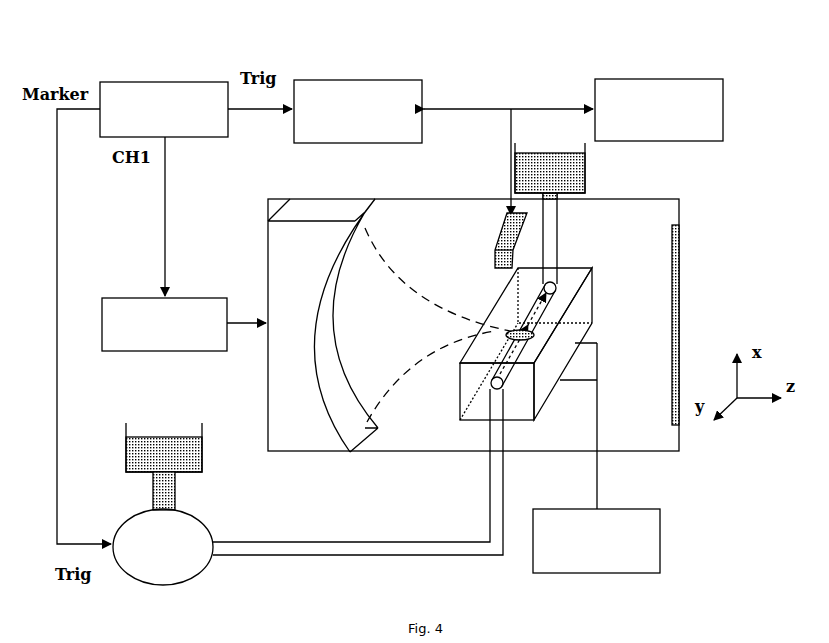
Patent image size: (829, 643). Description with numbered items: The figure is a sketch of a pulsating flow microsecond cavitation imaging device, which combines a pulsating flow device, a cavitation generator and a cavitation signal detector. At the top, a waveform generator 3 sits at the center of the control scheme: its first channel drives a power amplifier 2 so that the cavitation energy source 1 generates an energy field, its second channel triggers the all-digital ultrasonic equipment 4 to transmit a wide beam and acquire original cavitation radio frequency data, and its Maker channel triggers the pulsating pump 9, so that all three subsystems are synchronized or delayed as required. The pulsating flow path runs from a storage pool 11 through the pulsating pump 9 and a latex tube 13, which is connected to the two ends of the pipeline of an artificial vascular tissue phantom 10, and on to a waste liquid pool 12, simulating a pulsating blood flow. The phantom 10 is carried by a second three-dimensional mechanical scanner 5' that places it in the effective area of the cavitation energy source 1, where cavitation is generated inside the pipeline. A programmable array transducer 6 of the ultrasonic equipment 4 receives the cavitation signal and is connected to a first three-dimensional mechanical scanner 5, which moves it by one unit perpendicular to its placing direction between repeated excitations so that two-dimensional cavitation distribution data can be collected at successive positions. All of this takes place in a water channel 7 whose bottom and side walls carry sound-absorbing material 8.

The cavitation energy source 1 is at (325, 353).
The power amplifier 2 is at (102, 301).
The waveform generator 3 is at (100, 84).
The all-digital ultrasonic equipment 4 is at (294, 83).
The first three-dimensional mechanical scanner 5 is at (640, 88).
The second three-dimensional mechanical scanner 5' is at (624, 517).
The array transducer 6 is at (495, 268).
The water channel 7 is at (268, 426).
The sound-absorbing material 8 is at (672, 389).
The pulsating pump 9 is at (113, 528).
The artificial vascular tissue phantom 10 is at (573, 361).
The storage pool 11 is at (126, 447).
The waste liquid pool 12 is at (585, 184).
The latex tube 13 is at (290, 542).